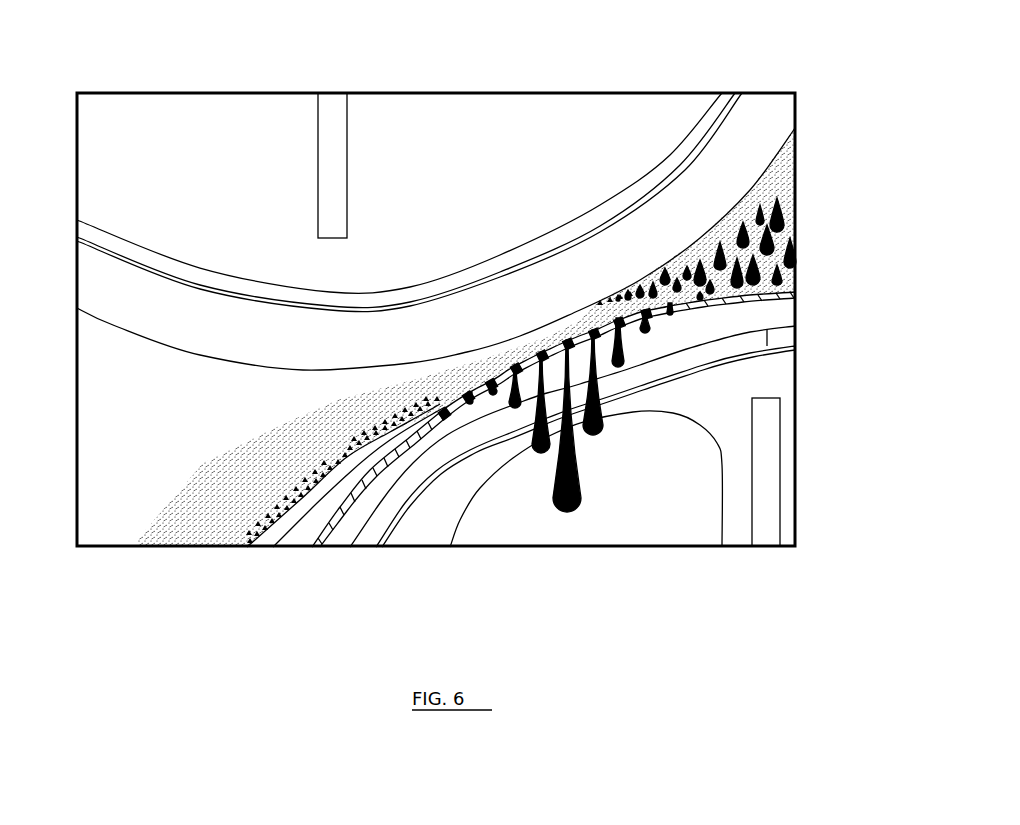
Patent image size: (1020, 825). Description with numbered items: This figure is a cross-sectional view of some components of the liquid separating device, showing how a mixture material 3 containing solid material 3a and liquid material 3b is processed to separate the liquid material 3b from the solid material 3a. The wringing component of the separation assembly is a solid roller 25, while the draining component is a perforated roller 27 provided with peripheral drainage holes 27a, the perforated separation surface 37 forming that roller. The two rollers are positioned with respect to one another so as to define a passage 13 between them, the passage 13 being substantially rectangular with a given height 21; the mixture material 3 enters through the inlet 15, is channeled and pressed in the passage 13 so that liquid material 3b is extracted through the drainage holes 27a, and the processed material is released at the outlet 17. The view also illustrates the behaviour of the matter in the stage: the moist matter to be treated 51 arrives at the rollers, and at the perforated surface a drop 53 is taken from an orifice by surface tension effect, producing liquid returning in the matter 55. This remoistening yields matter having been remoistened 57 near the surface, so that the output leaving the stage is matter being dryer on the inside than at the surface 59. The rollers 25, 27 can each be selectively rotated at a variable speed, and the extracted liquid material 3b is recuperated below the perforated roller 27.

The mixture material 3 is at (785, 182).
The solid material 3a is at (213, 535).
The liquid material 3b is at (583, 463).
The passage 13 is at (578, 310).
The inlet 15 is at (611, 290).
The outlet 17 is at (453, 352).
The height 21 is at (557, 318).
The solid roller 25 is at (448, 165).
The perforated roller 27 is at (743, 320).
The drainage holes 27a is at (705, 315).
The perforated separation surface 37 is at (770, 295).
The moist matter to be treated 51 is at (787, 232).
The drop 53 is at (476, 404).
The liquid returning in the matter 55 is at (448, 414).
The matter having been remoistened 57 is at (348, 458).
The matter being dryer on the inside than at the surface 59 is at (258, 475).